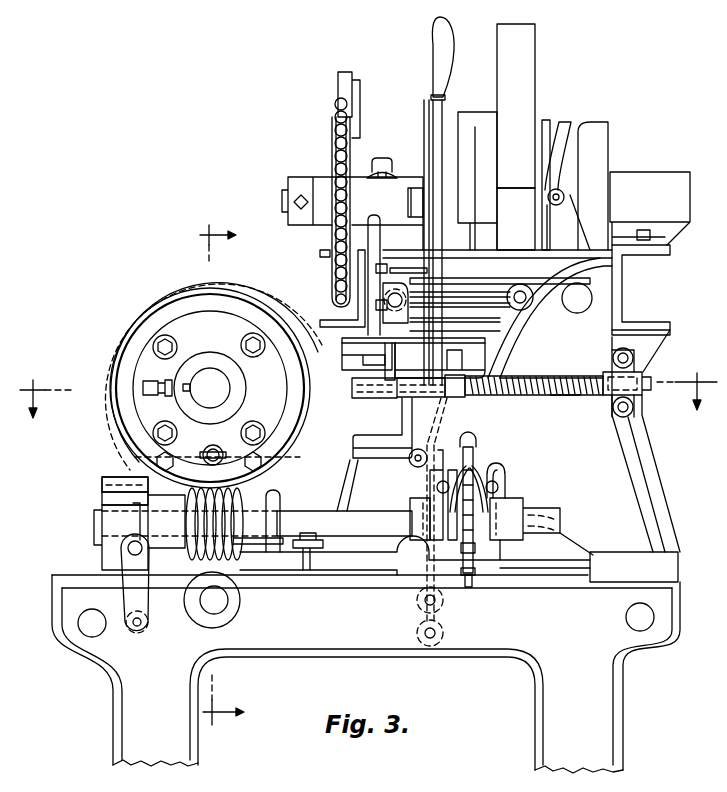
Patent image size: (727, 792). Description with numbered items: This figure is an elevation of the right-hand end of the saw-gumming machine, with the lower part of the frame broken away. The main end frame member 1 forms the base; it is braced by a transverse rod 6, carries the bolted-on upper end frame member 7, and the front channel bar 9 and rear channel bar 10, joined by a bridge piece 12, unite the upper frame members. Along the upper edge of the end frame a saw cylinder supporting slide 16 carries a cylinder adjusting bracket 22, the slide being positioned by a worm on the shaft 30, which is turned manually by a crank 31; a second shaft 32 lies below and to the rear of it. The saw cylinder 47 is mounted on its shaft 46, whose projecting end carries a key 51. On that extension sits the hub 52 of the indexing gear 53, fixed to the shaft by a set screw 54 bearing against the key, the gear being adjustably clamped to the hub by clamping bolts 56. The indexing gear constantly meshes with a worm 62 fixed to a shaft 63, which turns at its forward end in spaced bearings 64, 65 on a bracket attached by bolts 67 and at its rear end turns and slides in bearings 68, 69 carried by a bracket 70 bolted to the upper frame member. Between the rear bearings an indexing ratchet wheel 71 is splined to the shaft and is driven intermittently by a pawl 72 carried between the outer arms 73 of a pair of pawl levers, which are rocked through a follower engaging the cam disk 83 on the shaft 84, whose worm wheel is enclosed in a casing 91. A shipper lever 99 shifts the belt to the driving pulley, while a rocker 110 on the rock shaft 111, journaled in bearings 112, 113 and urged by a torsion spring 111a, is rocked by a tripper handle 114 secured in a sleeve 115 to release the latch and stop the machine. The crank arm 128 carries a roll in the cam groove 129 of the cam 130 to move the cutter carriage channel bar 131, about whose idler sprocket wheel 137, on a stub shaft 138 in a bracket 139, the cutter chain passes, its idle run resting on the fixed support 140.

The end frame member 1 is at (665, 600).
The transverse rod 6 is at (368, 387).
The upper end frame member 7 is at (610, 470).
The front channel bar 9 is at (393, 416).
The rear channel bar 10 is at (627, 283).
The bridge piece 12 is at (220, 475).
The saw cylinder supporting slide 16 is at (115, 532).
The cylinder adjusting bracket 22 is at (104, 487).
The shaft 30 is at (133, 548).
The crank 31 is at (143, 603).
The shaft 32 is at (240, 601).
The saw cylinder shaft 46 is at (210, 388).
The saw cylinder 47 is at (169, 385).
The key 51 is at (187, 383).
The hub 52 is at (240, 400).
The indexing gear 53 is at (127, 413).
The set screw 54 is at (140, 398).
The clamping bolt 56 is at (253, 352).
The worm 62 is at (200, 522).
The shaft 63 is at (380, 500).
The bearing 64 is at (157, 508).
The bearing 65 is at (265, 508).
The bolt 67 is at (133, 457).
The bearing 68 is at (418, 500).
The bearing 69 is at (515, 497).
The bracket 70 is at (503, 478).
The indexing ratchet wheel 71 is at (471, 585).
The pawl 72 is at (472, 444).
The outer arm 73 is at (452, 447).
The cam disk 83 is at (472, 125).
The shaft 84 is at (283, 200).
The casing 91 is at (525, 47).
The shipper lever 99 is at (444, 58).
The rocker 110 is at (498, 373).
The rock shaft 111 is at (593, 375).
The torsion spring 111a is at (556, 397).
The bearing 112 is at (370, 397).
The bearing 113 is at (635, 370).
The tripper handle 114 is at (428, 122).
The sleeve 115 is at (432, 398).
The crank arm 128 is at (543, 219).
The cam groove 129 is at (562, 136).
The cam 130 is at (598, 125).
The channel bar 131 is at (363, 308).
The idler sprocket wheel 137 is at (342, 147).
The stub shaft 138 is at (410, 190).
The bracket 139 is at (378, 215).
The fixed support 140 is at (345, 75).